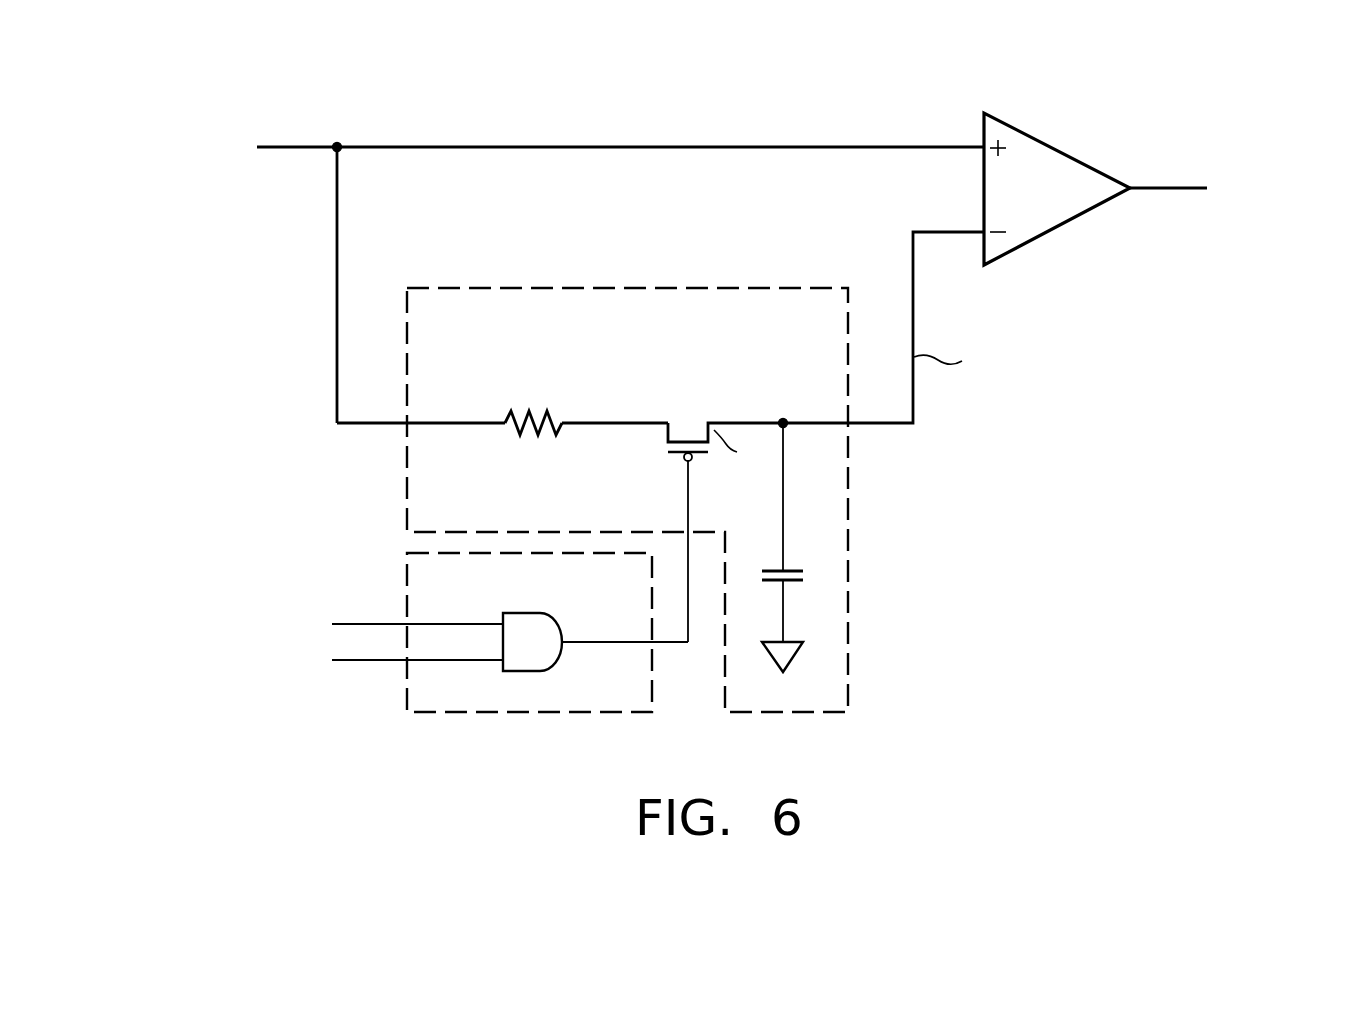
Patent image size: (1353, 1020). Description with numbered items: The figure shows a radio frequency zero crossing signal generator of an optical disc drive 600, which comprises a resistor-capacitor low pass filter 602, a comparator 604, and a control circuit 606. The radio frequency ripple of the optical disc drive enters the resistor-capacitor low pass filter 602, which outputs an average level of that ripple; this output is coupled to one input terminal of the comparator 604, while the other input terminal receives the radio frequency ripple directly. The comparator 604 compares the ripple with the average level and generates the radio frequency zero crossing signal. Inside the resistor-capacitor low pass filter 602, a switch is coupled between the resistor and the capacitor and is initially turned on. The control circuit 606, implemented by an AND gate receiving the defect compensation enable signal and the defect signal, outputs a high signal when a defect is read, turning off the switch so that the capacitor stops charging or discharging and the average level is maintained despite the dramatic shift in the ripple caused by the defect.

The radio frequency zero crossing signal generator of optical disc drive 600 is at (134, 68).
The resistor-capacitor low pass filter 602 is at (407, 483).
The comparator 604 is at (1058, 150).
The control circuit 606 is at (407, 573).